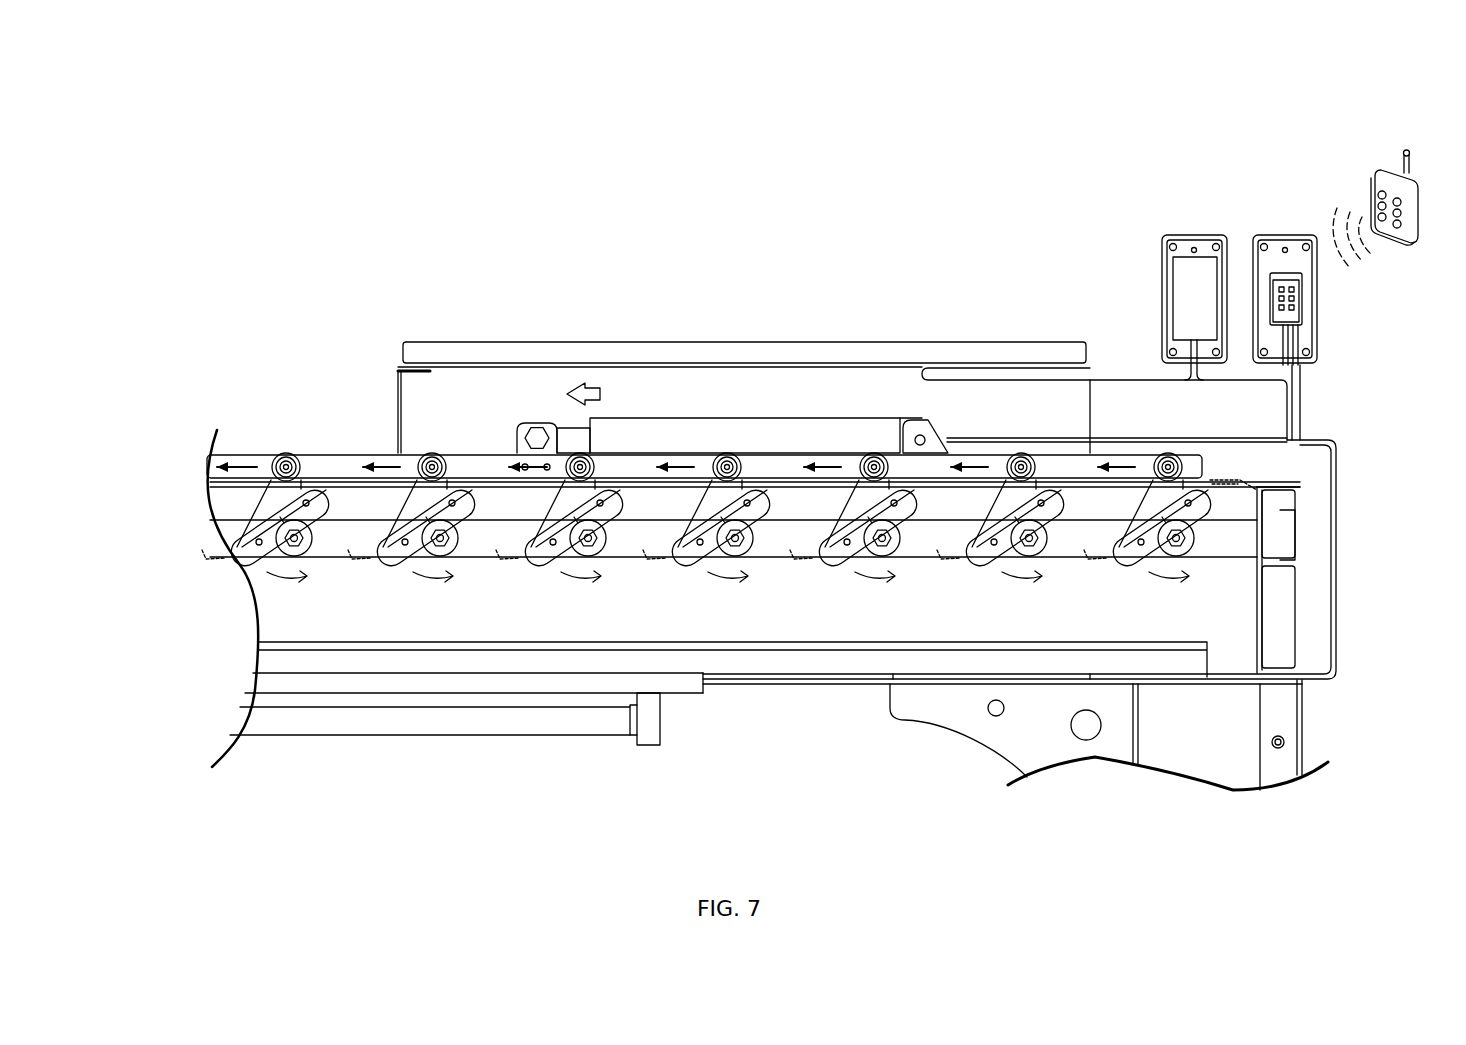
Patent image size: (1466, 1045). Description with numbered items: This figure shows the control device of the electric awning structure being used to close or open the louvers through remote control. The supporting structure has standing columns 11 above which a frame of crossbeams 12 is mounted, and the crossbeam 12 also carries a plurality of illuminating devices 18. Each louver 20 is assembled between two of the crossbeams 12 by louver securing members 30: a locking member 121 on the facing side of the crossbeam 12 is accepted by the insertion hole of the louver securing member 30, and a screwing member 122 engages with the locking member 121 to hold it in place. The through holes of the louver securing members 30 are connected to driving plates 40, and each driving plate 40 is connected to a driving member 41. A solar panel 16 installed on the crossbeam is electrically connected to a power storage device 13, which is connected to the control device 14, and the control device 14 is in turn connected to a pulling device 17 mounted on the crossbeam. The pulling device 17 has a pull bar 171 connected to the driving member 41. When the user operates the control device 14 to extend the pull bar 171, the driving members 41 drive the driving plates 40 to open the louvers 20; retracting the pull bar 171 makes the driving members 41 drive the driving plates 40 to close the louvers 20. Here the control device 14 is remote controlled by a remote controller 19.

The standing column 11 is at (1285, 720).
The crossbeam 12 is at (1237, 533).
The power storage device 13 is at (1183, 245).
The control device 14 is at (1273, 248).
The solar panel 16 is at (397, 372).
The pulling device 17 is at (825, 437).
The illuminating device 18 is at (408, 723).
The remote controller 19 is at (1390, 168).
The louver 20 is at (1240, 474).
The louver securing member 30 is at (657, 428).
The driving plate 40 is at (378, 451).
The driving member 41 is at (520, 428).
The locking member 121 is at (216, 536).
The screwing member 122 is at (213, 578).
The pull bar 171 is at (570, 437).